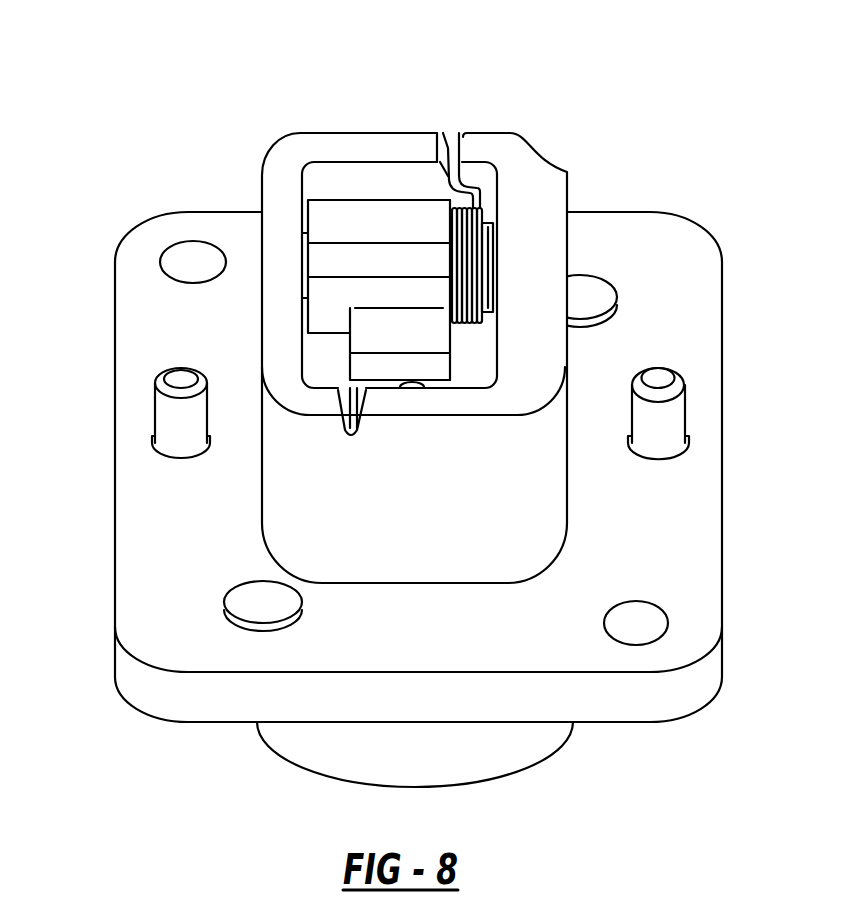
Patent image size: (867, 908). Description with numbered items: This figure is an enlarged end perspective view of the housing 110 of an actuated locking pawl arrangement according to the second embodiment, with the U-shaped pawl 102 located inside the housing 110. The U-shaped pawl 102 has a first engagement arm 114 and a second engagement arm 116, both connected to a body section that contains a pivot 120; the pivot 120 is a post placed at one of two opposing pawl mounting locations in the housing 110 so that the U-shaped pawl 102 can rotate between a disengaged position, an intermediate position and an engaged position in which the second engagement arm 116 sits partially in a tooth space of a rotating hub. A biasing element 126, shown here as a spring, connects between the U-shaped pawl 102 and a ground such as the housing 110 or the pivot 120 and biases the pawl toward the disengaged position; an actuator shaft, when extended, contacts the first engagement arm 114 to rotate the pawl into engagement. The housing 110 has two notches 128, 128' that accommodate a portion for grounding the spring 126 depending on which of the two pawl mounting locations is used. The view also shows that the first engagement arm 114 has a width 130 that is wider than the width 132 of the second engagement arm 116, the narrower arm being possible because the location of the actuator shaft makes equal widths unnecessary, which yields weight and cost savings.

The U-shaped pawl 102 is at (347, 260).
The housing 110 is at (545, 270).
The first engagement arm 114 is at (405, 203).
The second engagement arm 116 is at (422, 367).
The pivot 120 is at (457, 255).
The biasing element 126 is at (492, 265).
The notch 128 is at (451, 110).
The notch 128' is at (197, 458).
The width of the first engagement arm 130 is at (352, 222).
The width of the second engagement arm 132 is at (377, 338).